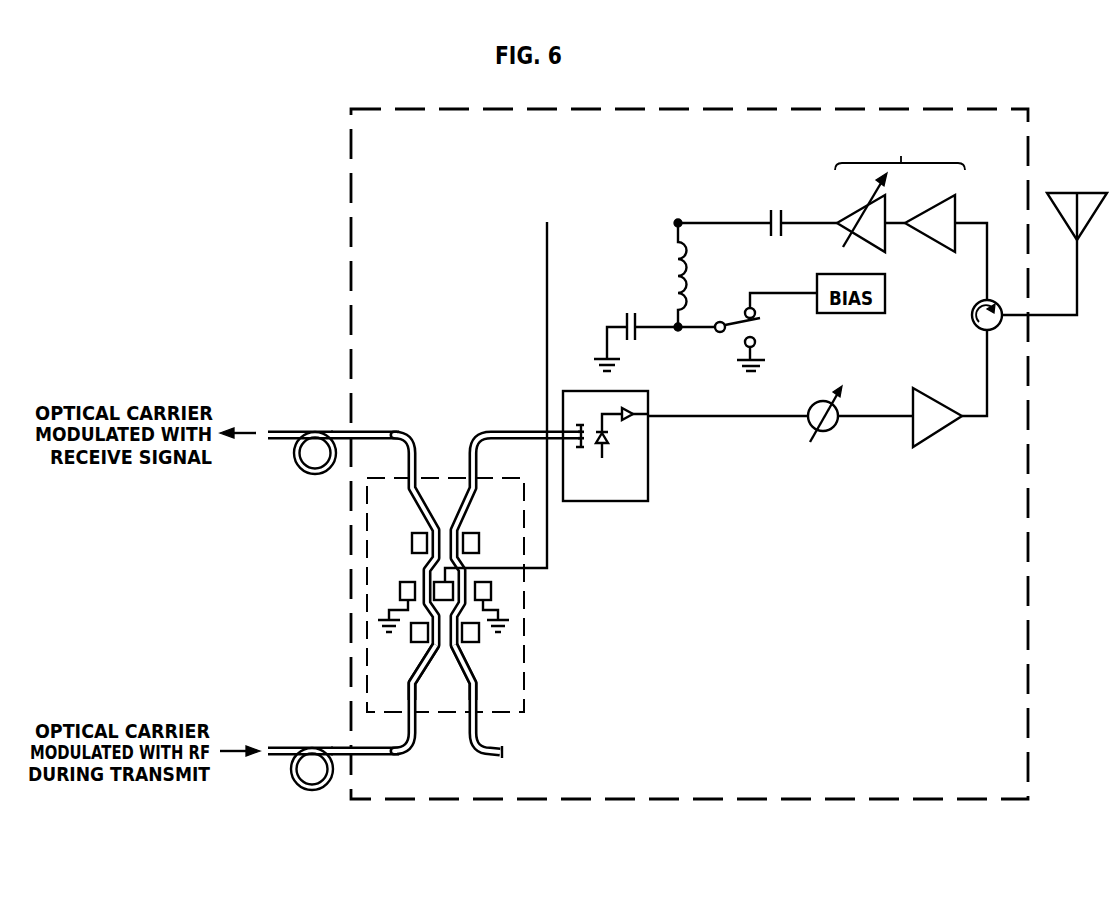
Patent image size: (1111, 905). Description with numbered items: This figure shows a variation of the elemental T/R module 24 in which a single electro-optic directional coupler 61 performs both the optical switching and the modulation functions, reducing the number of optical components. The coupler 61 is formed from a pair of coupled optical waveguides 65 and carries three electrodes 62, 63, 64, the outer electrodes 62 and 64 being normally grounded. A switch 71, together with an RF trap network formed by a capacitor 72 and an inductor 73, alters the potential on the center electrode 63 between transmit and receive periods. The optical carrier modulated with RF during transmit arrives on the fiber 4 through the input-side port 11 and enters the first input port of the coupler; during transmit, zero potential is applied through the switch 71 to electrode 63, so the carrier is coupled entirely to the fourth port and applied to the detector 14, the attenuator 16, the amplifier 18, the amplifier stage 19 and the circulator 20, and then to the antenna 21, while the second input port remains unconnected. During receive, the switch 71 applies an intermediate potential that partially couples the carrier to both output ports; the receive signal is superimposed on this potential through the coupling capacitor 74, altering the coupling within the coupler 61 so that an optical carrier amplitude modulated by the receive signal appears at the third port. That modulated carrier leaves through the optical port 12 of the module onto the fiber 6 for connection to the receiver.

The fiber 4 is at (286, 742).
The fiber 6 is at (286, 425).
The fiber input connection 11 is at (339, 742).
The optical port 12 is at (336, 425).
The component 14 is at (608, 503).
The component 16 is at (825, 437).
The component 18 is at (940, 440).
The amplifier stage 19 is at (884, 214).
The component 20 is at (970, 318).
The antenna 21 is at (1068, 189).
The elemental T/R module 24 is at (1029, 745).
The electro-optic directional coupler 61 is at (496, 490).
The electrode 62 is at (400, 588).
The electrode 63 is at (438, 583).
The electrode 64 is at (492, 590).
The coupled optical waveguides 65 is at (433, 664).
The switch 71 is at (732, 339).
The RF trap network capacitor 72 is at (623, 312).
The RF trap network inductor 73 is at (672, 262).
The coupling capacitor 74 is at (767, 209).